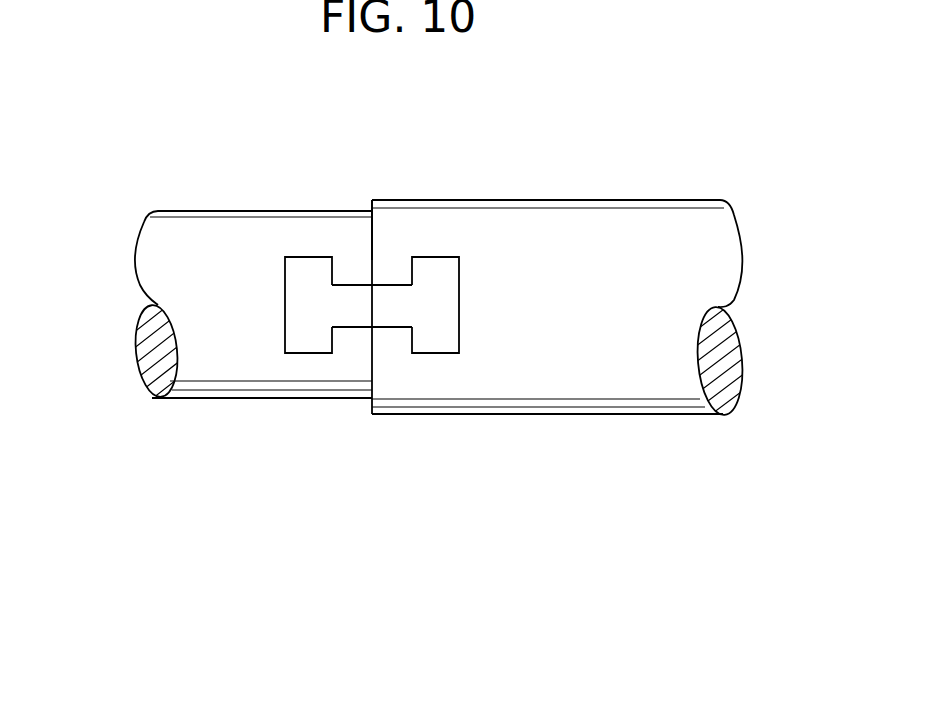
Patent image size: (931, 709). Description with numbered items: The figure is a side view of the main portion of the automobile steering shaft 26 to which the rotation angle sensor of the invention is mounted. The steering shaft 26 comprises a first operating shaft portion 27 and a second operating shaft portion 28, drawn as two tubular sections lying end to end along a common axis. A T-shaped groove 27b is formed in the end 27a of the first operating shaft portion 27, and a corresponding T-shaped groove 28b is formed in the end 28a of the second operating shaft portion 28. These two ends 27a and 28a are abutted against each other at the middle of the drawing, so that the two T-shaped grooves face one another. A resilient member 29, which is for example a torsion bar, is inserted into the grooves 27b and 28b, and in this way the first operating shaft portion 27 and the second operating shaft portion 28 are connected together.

The automobile steering shaft 26 is at (663, 201).
The first operating shaft portion 27 is at (176, 245).
The end of first operating shaft portion 27a is at (373, 247).
The T-shaped groove 27b is at (285, 303).
The second operating shaft portion 28 is at (702, 288).
The end of second operating shaft portion 28a is at (371, 362).
The T-shaped groove 28b is at (460, 307).
The resilient member 29 is at (412, 328).